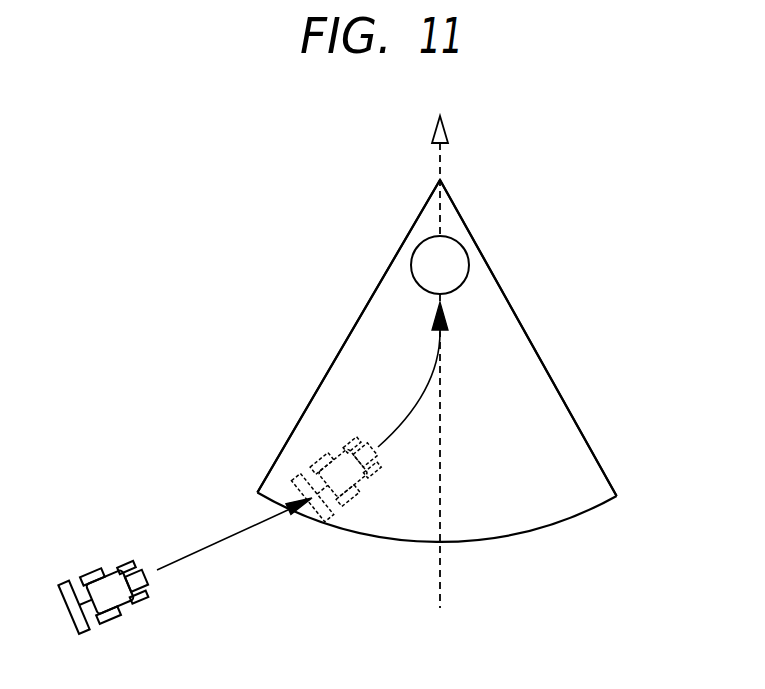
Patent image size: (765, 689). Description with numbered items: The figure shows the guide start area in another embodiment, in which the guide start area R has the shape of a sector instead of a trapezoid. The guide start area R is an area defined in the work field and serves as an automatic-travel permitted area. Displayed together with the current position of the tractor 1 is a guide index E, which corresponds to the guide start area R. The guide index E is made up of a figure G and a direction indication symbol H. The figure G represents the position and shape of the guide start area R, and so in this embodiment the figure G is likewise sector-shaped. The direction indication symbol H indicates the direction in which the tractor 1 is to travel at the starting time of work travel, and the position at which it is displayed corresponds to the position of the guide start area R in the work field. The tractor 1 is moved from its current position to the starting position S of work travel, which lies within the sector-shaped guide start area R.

The tractor 1 is at (106, 586).
The guide index E is at (347, 262).
The guide start area R is at (350, 378).
The figure G is at (573, 413).
The direction indication symbol H is at (444, 165).
The starting position S is at (440, 265).